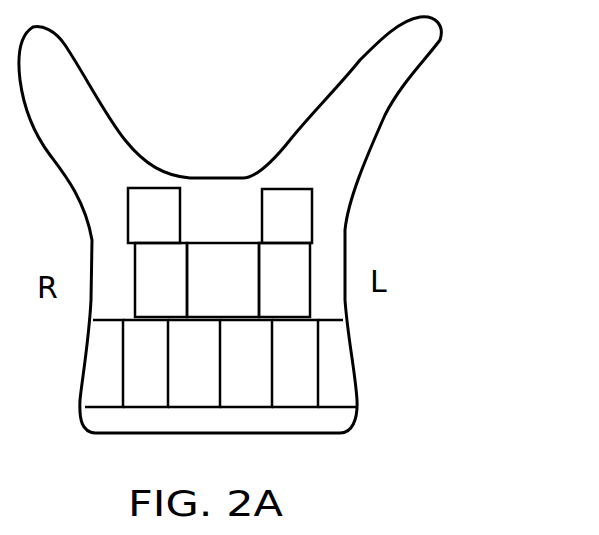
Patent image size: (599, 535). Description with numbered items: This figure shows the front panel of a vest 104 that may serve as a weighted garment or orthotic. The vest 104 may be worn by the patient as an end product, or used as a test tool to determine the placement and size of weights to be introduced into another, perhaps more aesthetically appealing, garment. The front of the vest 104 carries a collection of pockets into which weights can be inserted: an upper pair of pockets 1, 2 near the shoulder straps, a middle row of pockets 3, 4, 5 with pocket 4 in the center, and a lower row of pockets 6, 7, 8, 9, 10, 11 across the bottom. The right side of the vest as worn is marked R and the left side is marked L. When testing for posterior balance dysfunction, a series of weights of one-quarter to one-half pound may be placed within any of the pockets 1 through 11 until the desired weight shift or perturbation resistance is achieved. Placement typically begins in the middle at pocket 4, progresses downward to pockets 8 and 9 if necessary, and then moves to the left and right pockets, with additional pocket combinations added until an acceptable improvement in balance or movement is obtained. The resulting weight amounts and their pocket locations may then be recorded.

The vest 104 is at (415, 97).
The pocket 1 is at (154, 215).
The pocket 2 is at (287, 216).
The pocket 3 is at (161, 280).
The pocket 4 is at (223, 280).
The pocket 5 is at (284, 280).
The pocket 6 is at (104, 363).
The pocket 7 is at (145, 363).
The pocket 8 is at (194, 363).
The pocket 9 is at (246, 363).
The pocket 10 is at (295, 363).
The pocket 11 is at (337, 363).